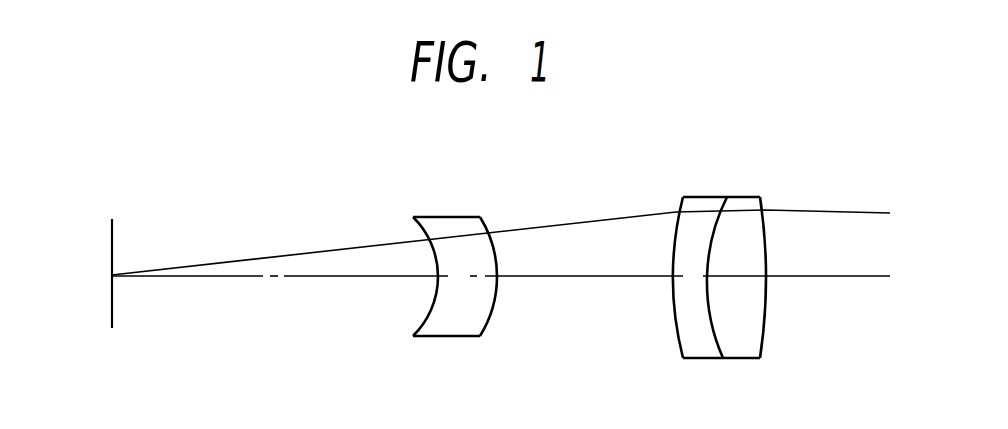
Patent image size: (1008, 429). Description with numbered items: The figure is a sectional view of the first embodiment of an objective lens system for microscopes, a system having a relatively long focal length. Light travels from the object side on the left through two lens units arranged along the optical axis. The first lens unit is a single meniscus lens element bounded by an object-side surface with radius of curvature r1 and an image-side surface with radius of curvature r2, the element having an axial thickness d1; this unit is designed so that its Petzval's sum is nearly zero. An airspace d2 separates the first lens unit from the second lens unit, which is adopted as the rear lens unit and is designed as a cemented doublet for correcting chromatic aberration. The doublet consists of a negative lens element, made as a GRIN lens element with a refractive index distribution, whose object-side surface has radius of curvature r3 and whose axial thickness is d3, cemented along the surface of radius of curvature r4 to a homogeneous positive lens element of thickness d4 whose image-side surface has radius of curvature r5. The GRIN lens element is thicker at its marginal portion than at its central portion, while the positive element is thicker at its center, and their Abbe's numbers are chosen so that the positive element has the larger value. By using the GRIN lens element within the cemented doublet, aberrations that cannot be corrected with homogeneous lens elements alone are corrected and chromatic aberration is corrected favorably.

The radius of curvature of first surface r1 is at (421, 229).
The radius of curvature of second surface r2 is at (482, 225).
The radius of curvature of third surface r3 is at (682, 204).
The radius of curvature of fourth surface r4 is at (723, 202).
The radius of curvature of fifth surface r5 is at (763, 203).
The thickness of first lens element d1 is at (458, 277).
The airspace between first and second lens units d2 is at (562, 277).
The thickness of GRIN lens element d3 is at (693, 277).
The thickness of third lens element d4 is at (742, 278).